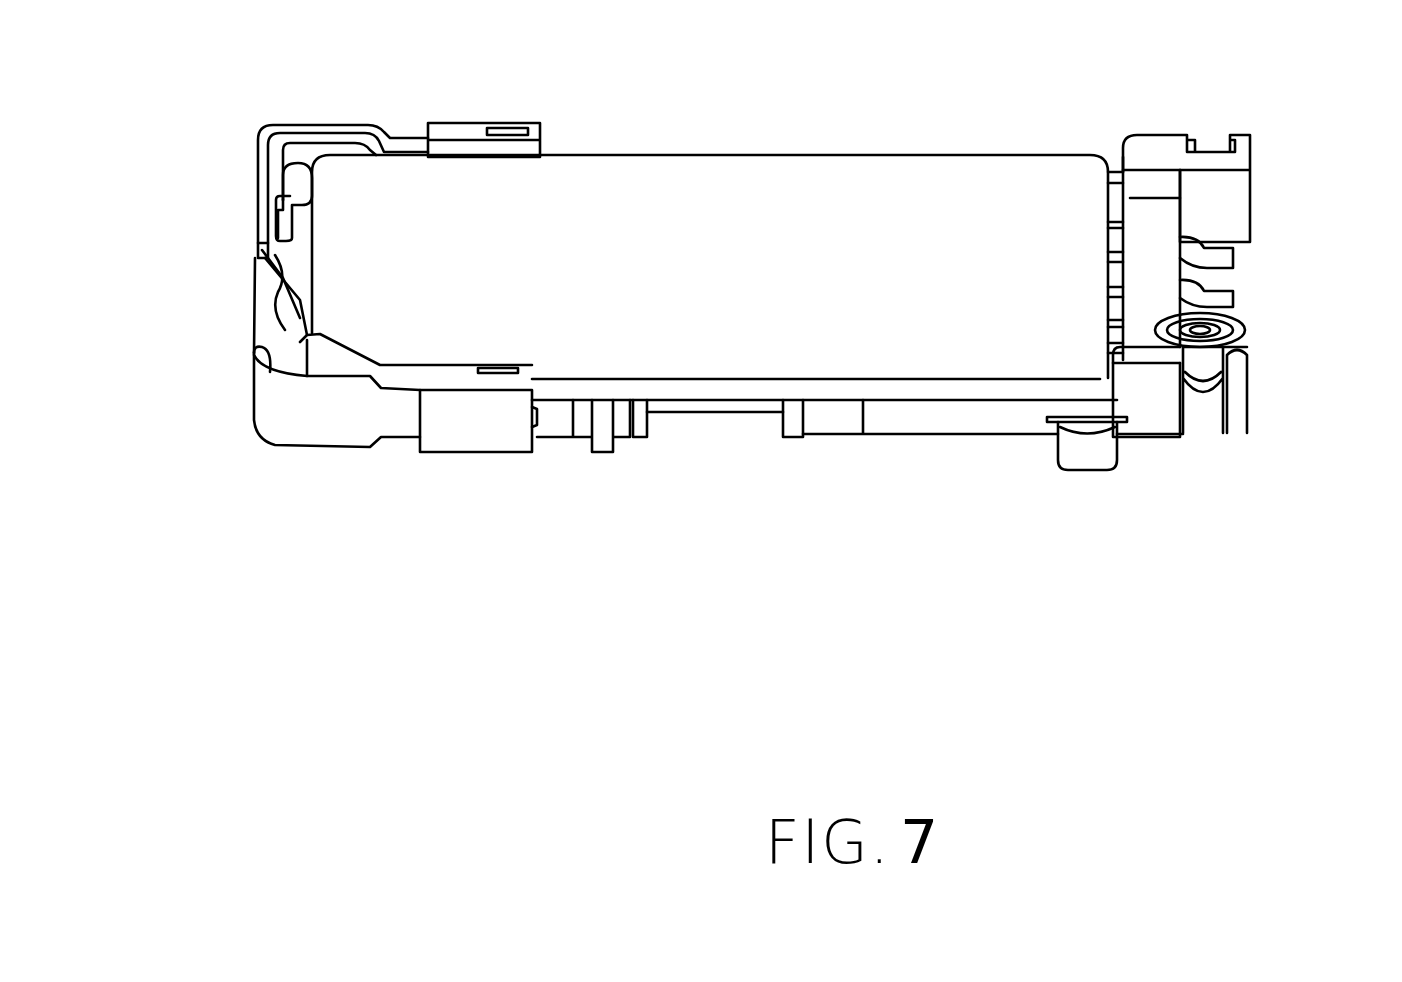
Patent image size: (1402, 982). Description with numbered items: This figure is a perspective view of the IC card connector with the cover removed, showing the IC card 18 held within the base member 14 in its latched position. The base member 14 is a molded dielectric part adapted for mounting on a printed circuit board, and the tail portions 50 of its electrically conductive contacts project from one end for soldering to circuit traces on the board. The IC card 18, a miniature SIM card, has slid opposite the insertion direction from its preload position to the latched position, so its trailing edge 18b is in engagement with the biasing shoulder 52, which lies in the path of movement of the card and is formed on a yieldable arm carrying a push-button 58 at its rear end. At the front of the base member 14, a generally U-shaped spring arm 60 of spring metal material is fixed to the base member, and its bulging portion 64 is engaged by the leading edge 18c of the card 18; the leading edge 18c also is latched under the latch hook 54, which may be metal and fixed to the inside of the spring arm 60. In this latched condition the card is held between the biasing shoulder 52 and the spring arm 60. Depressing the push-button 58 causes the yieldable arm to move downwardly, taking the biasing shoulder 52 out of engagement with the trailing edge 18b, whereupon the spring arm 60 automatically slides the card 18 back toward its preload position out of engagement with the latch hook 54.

The base member 14 is at (893, 433).
The IC card 18 is at (808, 193).
The trailing edge 18b is at (1127, 192).
The leading edge 18c is at (310, 257).
The tail portions 50 is at (1223, 293).
The biasing shoulder 52 is at (1105, 346).
The latch hook 54 is at (290, 183).
The push-button 58 is at (1240, 325).
The U-shaped spring arm 60 is at (262, 218).
The bulging portion 64 is at (260, 312).